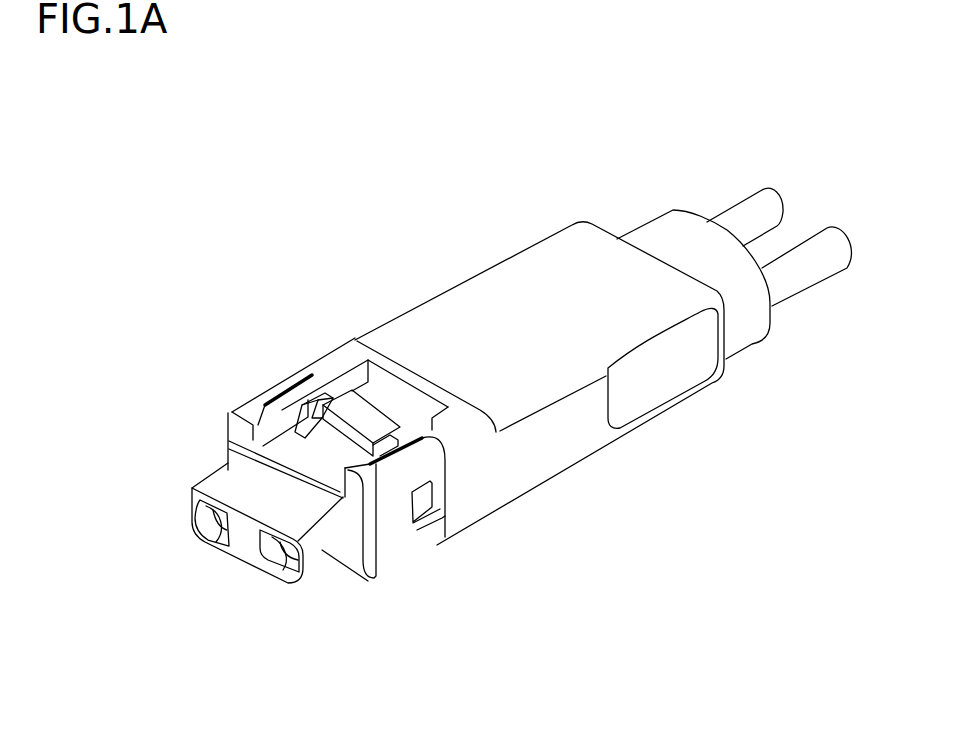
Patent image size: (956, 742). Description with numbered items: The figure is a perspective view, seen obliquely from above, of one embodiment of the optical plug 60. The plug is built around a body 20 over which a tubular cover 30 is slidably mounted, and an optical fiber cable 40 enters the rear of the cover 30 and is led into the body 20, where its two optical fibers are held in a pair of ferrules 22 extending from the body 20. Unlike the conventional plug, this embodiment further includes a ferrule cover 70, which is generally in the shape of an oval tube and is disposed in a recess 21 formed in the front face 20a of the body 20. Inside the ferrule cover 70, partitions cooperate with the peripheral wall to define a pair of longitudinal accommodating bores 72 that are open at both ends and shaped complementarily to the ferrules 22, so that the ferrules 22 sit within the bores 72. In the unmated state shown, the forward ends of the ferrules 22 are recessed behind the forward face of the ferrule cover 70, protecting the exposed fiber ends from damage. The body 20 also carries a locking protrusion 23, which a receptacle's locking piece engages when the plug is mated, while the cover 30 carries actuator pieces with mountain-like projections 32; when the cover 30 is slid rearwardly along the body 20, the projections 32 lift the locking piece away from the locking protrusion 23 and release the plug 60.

The optical plug 60 is at (347, 180).
The cover 30 is at (468, 305).
The optical fiber cable 40 is at (800, 264).
The body 20 is at (282, 402).
The front face of the body 20a is at (353, 583).
The recess 21 is at (338, 584).
The locking protrusion 23 is at (373, 417).
The mountain-like projections 32 is at (316, 397).
The ferrule cover 70 is at (220, 483).
The ferrules 22 is at (208, 514).
The accommodating bores 72 is at (219, 536).